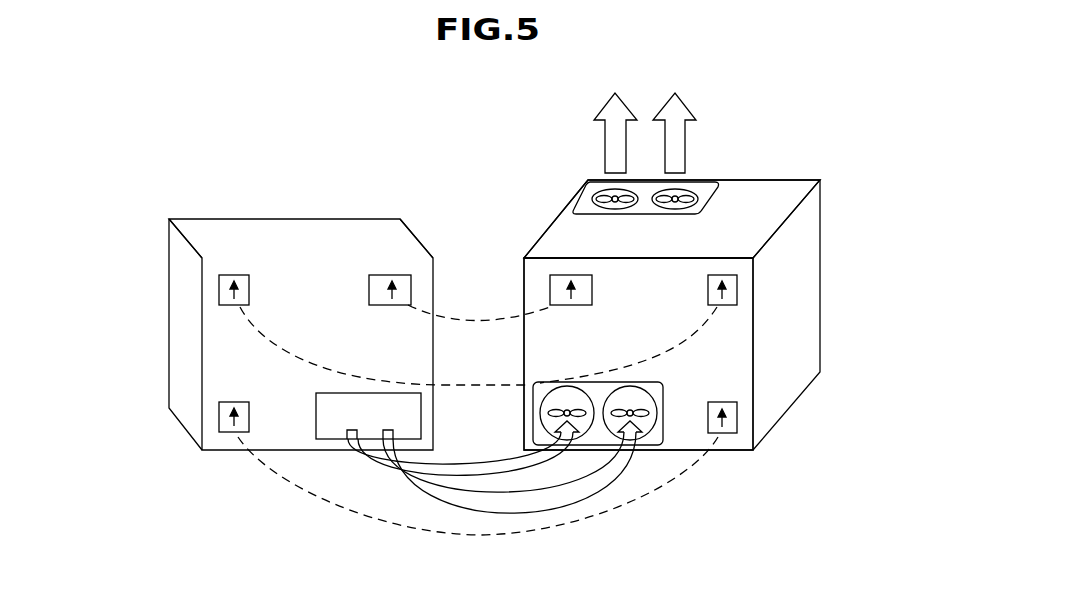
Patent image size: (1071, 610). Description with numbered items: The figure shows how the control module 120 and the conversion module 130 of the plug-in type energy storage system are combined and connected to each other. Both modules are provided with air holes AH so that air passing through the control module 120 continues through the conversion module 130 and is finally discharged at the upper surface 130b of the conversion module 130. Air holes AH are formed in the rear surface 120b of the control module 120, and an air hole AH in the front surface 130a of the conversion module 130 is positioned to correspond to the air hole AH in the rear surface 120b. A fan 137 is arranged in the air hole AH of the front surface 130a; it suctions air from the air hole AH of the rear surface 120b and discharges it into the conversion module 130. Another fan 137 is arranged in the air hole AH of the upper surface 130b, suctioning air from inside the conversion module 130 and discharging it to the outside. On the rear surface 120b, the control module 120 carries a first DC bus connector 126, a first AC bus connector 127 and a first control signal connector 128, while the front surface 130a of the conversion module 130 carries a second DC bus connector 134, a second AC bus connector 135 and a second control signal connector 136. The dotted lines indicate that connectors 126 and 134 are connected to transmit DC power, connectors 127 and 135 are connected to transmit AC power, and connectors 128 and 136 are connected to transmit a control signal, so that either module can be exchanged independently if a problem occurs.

The control module 120 is at (218, 235).
The rear surface of the control module 120b is at (222, 357).
The first DC bus connector 126 is at (226, 413).
The first AC bus connector 127 is at (221, 286).
The first control signal connector 128 is at (383, 289).
The conversion module 130 is at (803, 290).
The front surface of the conversion module 130a is at (735, 370).
The upper surface of the conversion module 130b is at (775, 197).
The second DC bus connector 134 is at (732, 420).
The second AC bus connector 135 is at (740, 282).
The second control signal connector 136 is at (562, 282).
The fan 137 is at (613, 198).
The air hole AH is at (603, 196).